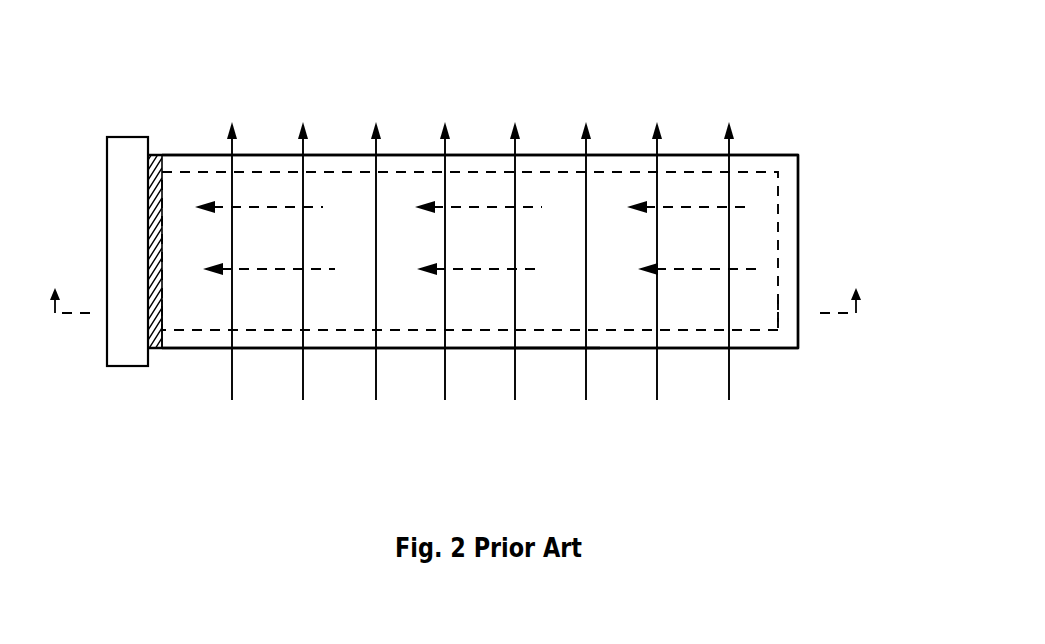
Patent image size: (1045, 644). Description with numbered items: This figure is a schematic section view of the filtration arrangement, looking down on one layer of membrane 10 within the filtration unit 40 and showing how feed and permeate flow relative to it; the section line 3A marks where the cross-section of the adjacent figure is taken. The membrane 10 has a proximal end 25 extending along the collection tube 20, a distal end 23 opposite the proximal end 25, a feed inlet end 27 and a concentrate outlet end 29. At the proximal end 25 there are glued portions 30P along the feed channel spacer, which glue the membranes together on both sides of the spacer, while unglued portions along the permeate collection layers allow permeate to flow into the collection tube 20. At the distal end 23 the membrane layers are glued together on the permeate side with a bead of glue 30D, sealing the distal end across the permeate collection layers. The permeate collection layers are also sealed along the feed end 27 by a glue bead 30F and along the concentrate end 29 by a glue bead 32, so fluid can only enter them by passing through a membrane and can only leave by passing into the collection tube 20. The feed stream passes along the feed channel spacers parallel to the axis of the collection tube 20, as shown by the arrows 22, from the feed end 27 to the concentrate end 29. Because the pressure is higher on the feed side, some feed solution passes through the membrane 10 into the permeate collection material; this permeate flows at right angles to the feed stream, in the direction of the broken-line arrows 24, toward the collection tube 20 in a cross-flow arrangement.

The membrane 10 is at (603, 190).
The collection tube 20 is at (135, 207).
The arrows 22 is at (657, 295).
The distal end 23 is at (802, 160).
The arrows 24 is at (265, 206).
The proximal end 25 is at (167, 160).
The feed inlet end 27 is at (412, 348).
The concentrate outlet end 29 is at (408, 155).
The glue bead 32 is at (692, 163).
The filtration unit 40 is at (798, 79).
The glued portions 30P is at (163, 313).
The bead of glue 30D is at (788, 313).
The glue bead 30F is at (550, 338).
The section line 3A is at (455, 285).